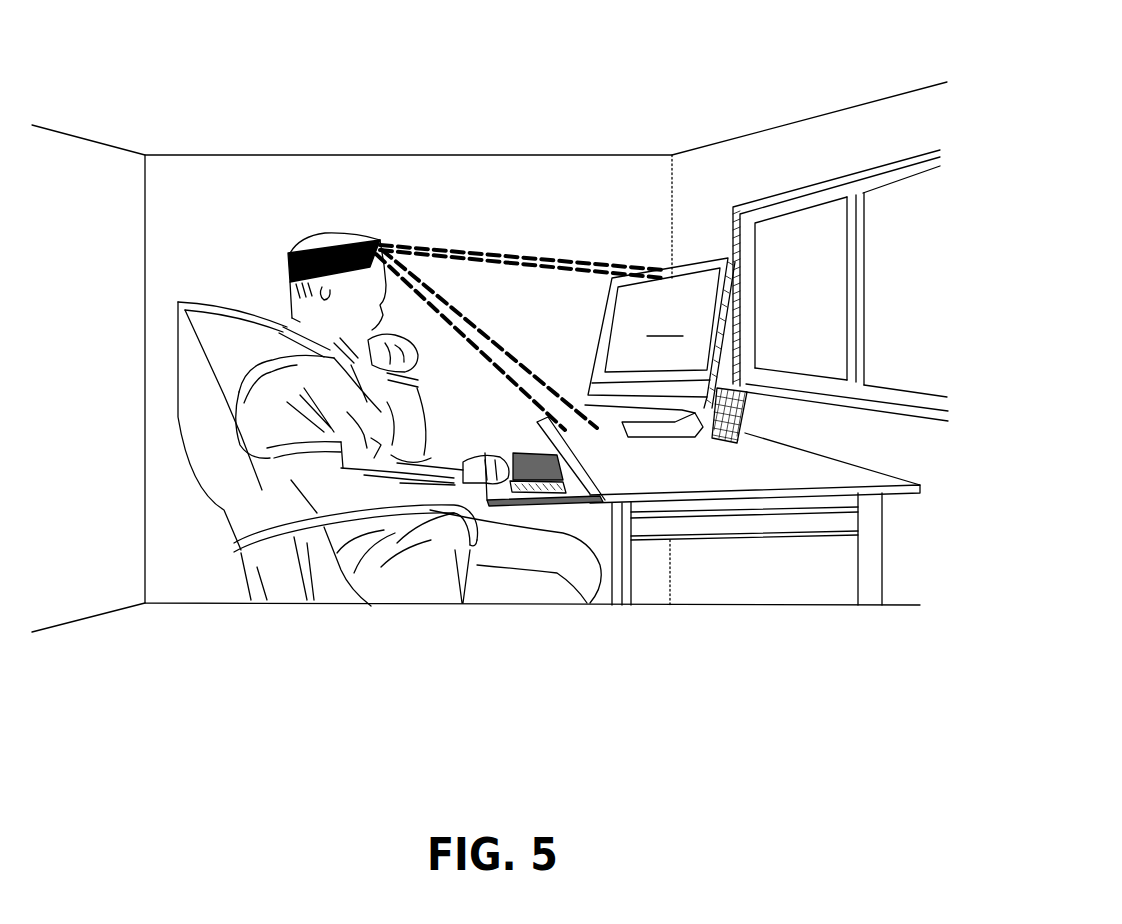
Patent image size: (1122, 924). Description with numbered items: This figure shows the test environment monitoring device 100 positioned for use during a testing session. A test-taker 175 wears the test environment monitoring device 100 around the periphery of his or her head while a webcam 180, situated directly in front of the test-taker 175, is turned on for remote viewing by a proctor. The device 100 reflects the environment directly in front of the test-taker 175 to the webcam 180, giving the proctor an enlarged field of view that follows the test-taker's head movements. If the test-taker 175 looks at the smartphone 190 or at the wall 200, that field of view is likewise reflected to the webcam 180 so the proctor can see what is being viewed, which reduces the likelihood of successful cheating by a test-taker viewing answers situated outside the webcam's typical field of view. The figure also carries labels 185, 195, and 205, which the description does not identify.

The test environment monitoring device 100 is at (373, 247).
The test-taker 175 is at (287, 430).
The webcam 180 is at (660, 308).
The user's hand / wrist-worn device 185 is at (455, 480).
The smartphone 190 is at (577, 427).
The mobile phone 195 is at (743, 410).
The wall 200 is at (918, 130).
The displayed content 205 is at (668, 324).